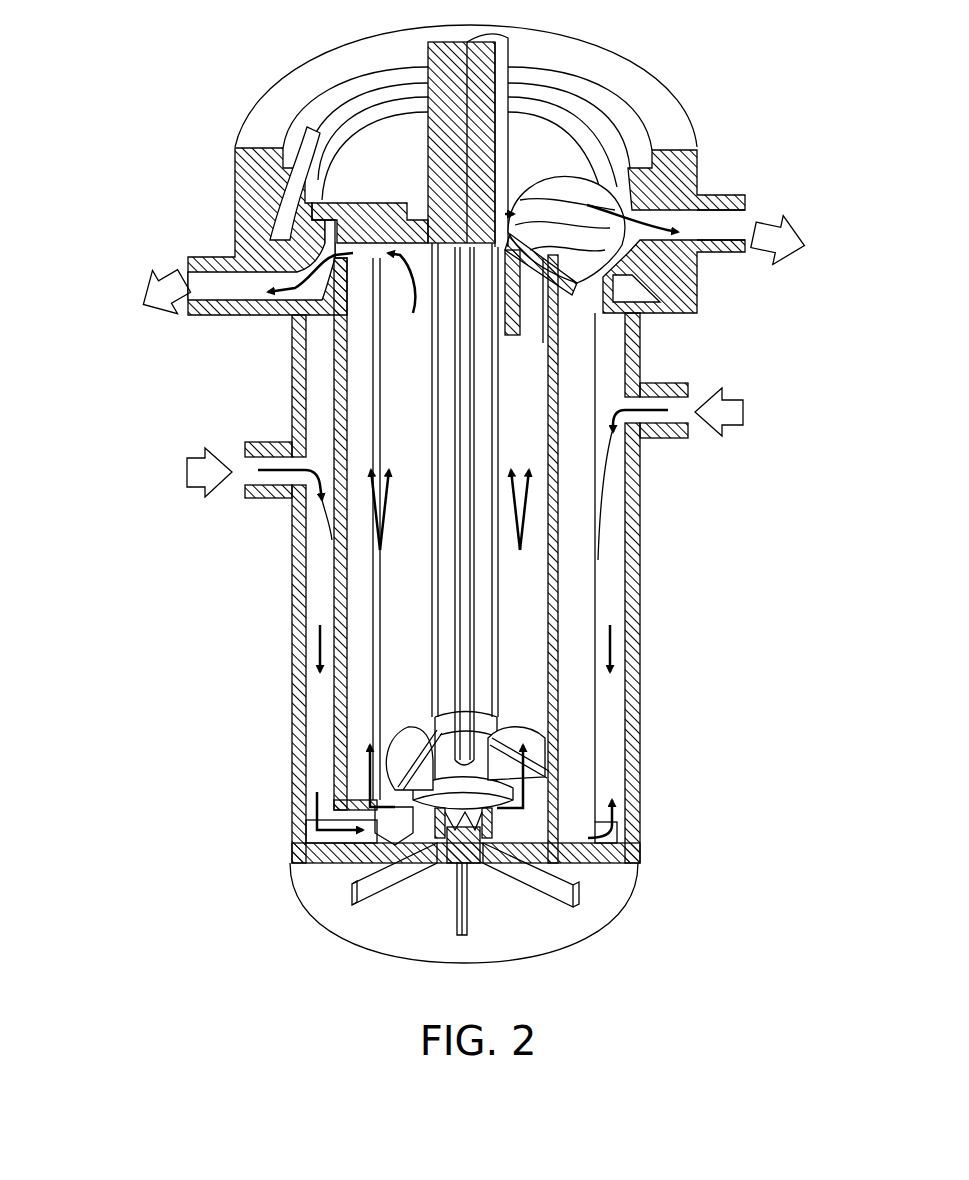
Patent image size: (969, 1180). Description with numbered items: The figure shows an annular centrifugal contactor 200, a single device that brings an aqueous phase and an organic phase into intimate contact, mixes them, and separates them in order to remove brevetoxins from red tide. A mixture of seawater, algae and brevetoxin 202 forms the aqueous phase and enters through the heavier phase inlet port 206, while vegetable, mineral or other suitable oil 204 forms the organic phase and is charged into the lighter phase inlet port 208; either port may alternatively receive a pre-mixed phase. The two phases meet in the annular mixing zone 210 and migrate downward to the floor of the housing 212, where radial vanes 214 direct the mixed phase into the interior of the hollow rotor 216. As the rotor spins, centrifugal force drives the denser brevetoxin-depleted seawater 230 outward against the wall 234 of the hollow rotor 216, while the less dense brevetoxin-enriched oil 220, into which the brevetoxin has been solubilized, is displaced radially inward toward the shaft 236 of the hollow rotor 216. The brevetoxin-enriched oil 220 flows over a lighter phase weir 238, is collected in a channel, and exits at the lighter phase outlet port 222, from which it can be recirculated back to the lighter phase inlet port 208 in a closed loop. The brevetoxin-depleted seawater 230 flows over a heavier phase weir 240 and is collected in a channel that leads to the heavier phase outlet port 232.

The annular centrifugal contactor 200 is at (728, 80).
The mixture of seawater, algae and brevetoxin 202 is at (745, 397).
The oil 204 is at (192, 457).
The heavier phase inlet port 206 is at (680, 440).
The lighter phase inlet port 208 is at (243, 490).
The annular mixing zone 210 is at (322, 765).
The housing 212 is at (292, 702).
The radial vanes 214 is at (577, 893).
The hollow rotor 216 is at (475, 773).
The brevetoxin-enriched oil 220 is at (172, 280).
The lighter phase outlet port 222 is at (232, 300).
The brevetoxin-depleted seawater 230 is at (804, 230).
The heavier phase outlet port 232 is at (747, 203).
The wall of the hollow rotor 234 is at (362, 603).
The shaft of the hollow rotor 236 is at (472, 605).
The lighter phase weir 238 is at (395, 300).
The heavier phase weir 240 is at (692, 267).